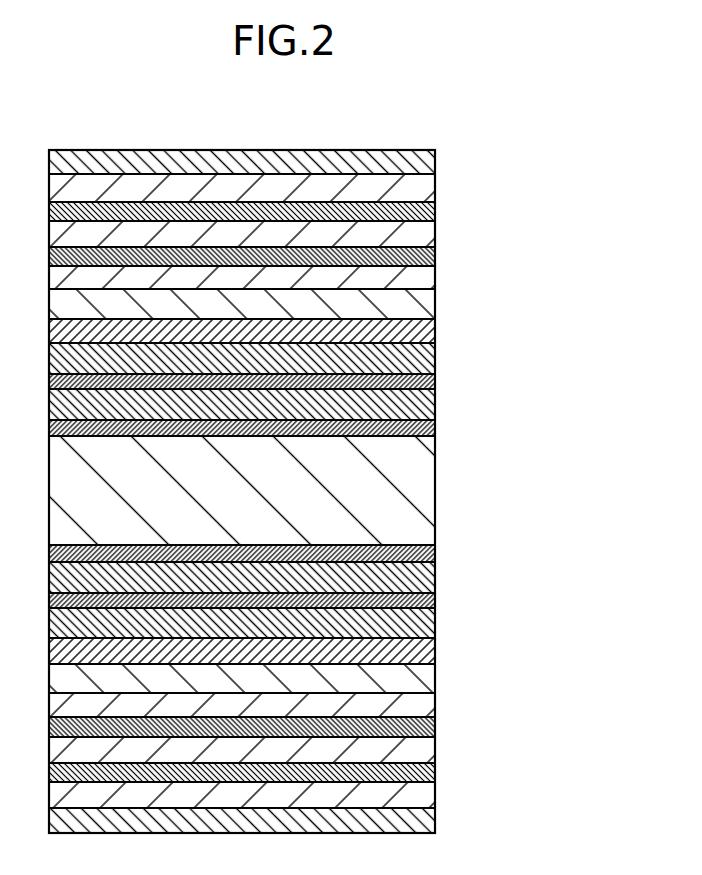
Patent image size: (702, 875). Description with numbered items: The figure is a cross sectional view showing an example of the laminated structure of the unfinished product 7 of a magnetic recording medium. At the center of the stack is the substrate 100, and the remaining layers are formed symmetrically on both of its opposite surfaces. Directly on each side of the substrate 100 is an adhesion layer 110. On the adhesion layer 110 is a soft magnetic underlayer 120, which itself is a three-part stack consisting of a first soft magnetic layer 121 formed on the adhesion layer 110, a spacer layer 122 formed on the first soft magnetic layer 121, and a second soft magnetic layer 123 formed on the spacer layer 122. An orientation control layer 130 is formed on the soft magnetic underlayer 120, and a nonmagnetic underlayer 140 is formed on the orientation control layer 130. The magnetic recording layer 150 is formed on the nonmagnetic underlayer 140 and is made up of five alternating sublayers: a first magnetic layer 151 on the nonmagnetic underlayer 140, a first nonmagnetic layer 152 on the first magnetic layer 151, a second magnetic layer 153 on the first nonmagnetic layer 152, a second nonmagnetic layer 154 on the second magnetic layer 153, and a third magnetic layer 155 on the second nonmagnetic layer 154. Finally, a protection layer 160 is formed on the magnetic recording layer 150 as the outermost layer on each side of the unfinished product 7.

The unfinished product 7 is at (277, 146).
The substrate 100 is at (435, 490).
The adhesion layer 110 is at (435, 428).
The soft magnetic underlayer 120 is at (544, 347).
The first soft magnetic layer 121 is at (435, 404).
The spacer layer 122 is at (435, 381).
The second soft magnetic layer 123 is at (435, 358).
The orientation control layer 130 is at (435, 331).
The nonmagnetic underlayer 140 is at (435, 304).
The magnetic recording layer 150 is at (544, 176).
The first magnetic layer 151 is at (435, 277).
The first nonmagnetic layer 152 is at (435, 256).
The second magnetic layer 153 is at (435, 234).
The second nonmagnetic layer 154 is at (435, 212).
The third magnetic layer 155 is at (435, 187).
The protection layer 160 is at (435, 162).